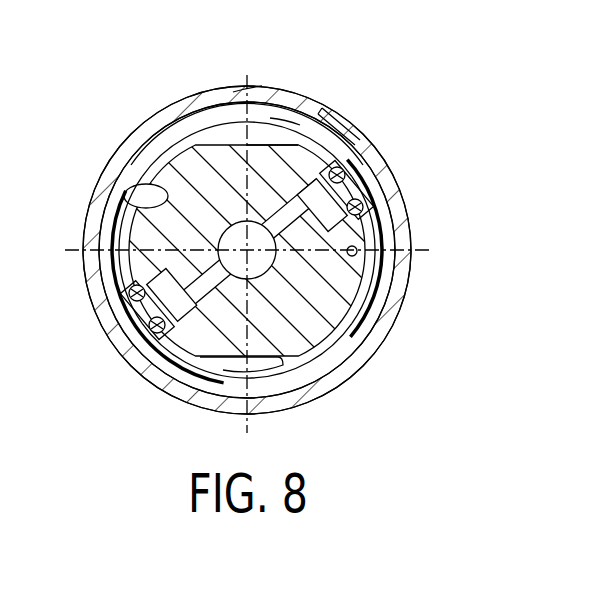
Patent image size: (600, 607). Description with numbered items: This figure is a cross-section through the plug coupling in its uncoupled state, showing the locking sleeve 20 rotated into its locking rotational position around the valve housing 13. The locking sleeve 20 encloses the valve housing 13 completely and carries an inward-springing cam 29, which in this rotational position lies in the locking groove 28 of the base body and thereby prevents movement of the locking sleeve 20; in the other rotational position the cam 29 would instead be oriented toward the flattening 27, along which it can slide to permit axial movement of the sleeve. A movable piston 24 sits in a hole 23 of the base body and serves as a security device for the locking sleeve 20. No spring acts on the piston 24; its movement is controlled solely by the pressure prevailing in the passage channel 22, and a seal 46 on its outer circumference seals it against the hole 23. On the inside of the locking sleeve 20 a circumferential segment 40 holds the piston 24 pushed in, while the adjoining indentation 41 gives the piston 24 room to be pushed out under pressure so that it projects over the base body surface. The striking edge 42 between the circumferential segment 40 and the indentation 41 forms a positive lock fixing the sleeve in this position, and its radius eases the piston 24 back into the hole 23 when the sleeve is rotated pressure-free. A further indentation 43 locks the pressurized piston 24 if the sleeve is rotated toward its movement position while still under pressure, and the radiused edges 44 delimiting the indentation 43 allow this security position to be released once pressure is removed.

The valve housing 13 is at (123, 272).
The locking sleeve 20 is at (195, 103).
The passage channel 22 is at (145, 378).
The hole 23 is at (355, 305).
The piston 24 is at (383, 263).
The flattening 27 is at (240, 130).
The locking groove 28 is at (143, 200).
The cam 29 is at (158, 148).
The circumferential segment 40 is at (253, 92).
The indentation 41 is at (393, 230).
The striking edge 42 is at (353, 160).
The indentation 43 is at (318, 114).
The edges 44 is at (272, 113).
The seal 46 is at (357, 251).